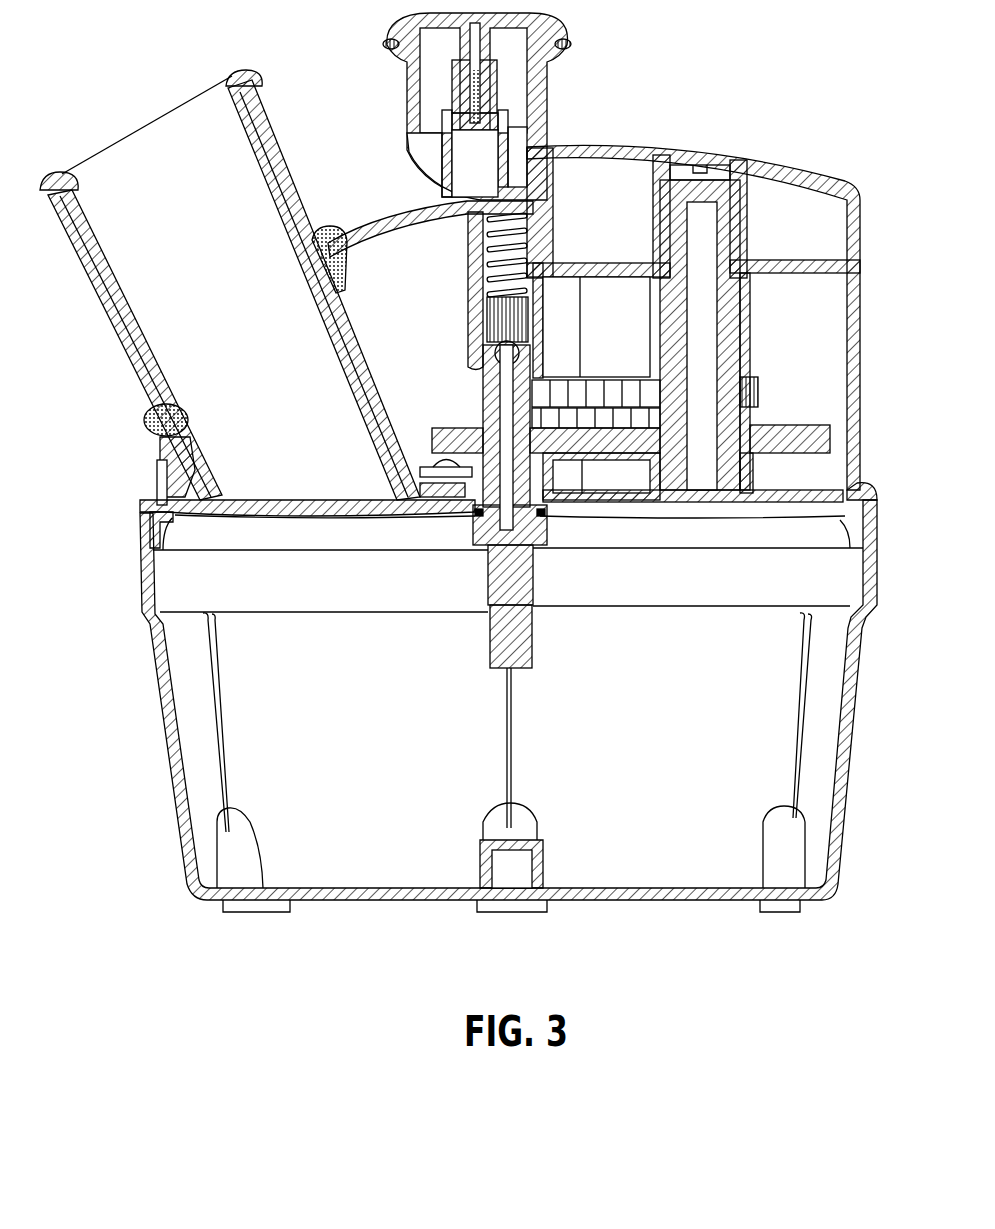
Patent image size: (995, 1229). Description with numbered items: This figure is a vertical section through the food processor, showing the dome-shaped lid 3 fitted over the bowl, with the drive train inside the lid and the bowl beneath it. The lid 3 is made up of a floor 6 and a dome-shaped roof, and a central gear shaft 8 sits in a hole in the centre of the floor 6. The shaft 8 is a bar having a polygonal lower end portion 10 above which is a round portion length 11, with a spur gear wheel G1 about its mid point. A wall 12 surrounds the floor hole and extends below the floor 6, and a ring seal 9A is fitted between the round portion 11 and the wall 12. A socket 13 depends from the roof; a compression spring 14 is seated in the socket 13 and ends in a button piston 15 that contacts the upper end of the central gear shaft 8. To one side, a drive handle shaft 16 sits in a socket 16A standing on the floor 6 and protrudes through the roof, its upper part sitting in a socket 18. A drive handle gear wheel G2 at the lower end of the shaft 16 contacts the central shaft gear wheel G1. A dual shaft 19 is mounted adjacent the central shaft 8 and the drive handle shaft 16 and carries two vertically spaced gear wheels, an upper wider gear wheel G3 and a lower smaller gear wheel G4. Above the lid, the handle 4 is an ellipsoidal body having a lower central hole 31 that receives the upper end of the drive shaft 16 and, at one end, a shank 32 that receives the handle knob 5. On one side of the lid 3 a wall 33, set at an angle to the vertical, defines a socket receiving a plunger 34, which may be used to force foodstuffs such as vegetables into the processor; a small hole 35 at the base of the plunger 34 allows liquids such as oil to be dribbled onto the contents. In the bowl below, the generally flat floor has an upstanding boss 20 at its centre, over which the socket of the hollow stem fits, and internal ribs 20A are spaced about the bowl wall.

The lid 3 is at (384, 213).
The handle 4 is at (652, 146).
The handle knob 5 is at (548, 88).
The floor 6 is at (617, 501).
The central gear shaft 8 is at (483, 403).
The ring seal 9A is at (477, 518).
The polygonal lower end portion 10 is at (531, 645).
The round portion length 11 is at (531, 590).
The wall 12 is at (548, 516).
The socket 13 is at (480, 248).
The compression spring 14 is at (483, 287).
The button piston 15 is at (496, 354).
The drive handle shaft 16 is at (718, 357).
The socket 16A is at (749, 462).
The socket 18 is at (747, 322).
The dual shaft 19 is at (566, 329).
The boss 20 is at (490, 862).
The internal ribs 20A is at (228, 781).
The lower central hole 31 is at (703, 168).
The shank 32 is at (530, 153).
The wall 33 is at (157, 478).
The plunger 34 is at (118, 256).
The small hole 35 is at (315, 505).
The spur gear wheel G1 is at (450, 441).
The drive handle gear wheel G2 is at (772, 431).
The upper gear wheel G3 is at (624, 388).
The lower gear wheel G4 is at (601, 476).